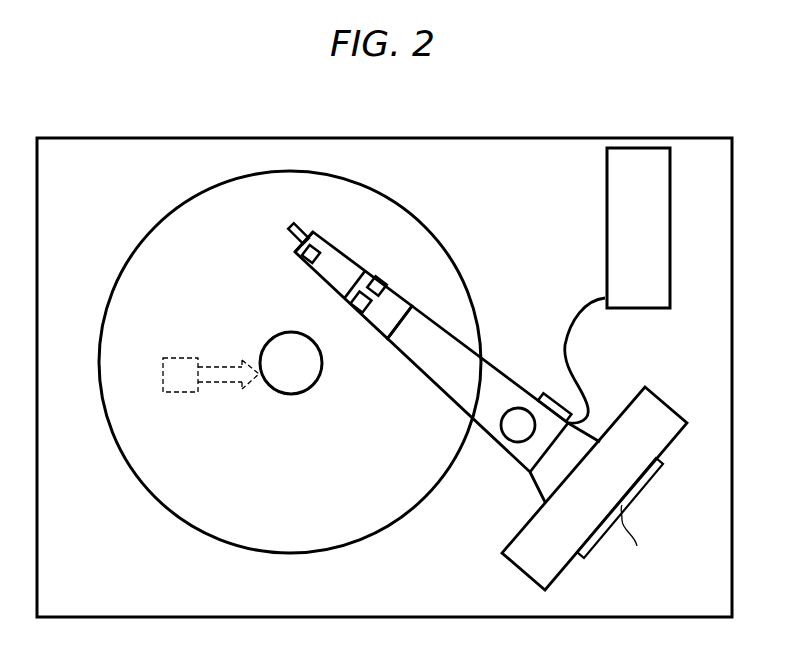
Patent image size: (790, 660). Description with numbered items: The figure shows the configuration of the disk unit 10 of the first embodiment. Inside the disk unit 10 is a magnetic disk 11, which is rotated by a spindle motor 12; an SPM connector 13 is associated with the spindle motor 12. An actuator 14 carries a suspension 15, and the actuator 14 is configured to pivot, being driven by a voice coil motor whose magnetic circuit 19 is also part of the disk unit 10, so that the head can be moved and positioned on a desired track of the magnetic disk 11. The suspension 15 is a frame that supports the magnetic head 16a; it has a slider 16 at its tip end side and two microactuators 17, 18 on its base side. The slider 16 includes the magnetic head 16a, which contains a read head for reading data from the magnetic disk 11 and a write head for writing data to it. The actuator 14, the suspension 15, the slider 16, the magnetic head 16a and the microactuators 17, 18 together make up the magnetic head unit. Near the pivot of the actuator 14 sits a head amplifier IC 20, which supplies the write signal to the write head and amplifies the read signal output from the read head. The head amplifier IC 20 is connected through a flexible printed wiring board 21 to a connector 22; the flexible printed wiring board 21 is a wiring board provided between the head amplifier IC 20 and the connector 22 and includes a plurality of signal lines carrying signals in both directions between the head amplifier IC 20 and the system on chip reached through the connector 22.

The disk unit 10 is at (663, 138).
The magnetic disk 11 is at (415, 215).
The spindle motor 12 is at (288, 394).
The SPM connector 13 is at (185, 393).
The actuator 14 is at (508, 378).
The suspension 15 is at (358, 331).
The slider 16 is at (341, 251).
The magnetic head 16a is at (298, 224).
The microactuator 17 is at (381, 278).
The microactuator 18 is at (376, 309).
The magnetic circuit 19 is at (511, 546).
The head amplifier IC 20 is at (557, 399).
The flexible printed wiring board 21 is at (585, 312).
The connector 22 is at (607, 229).